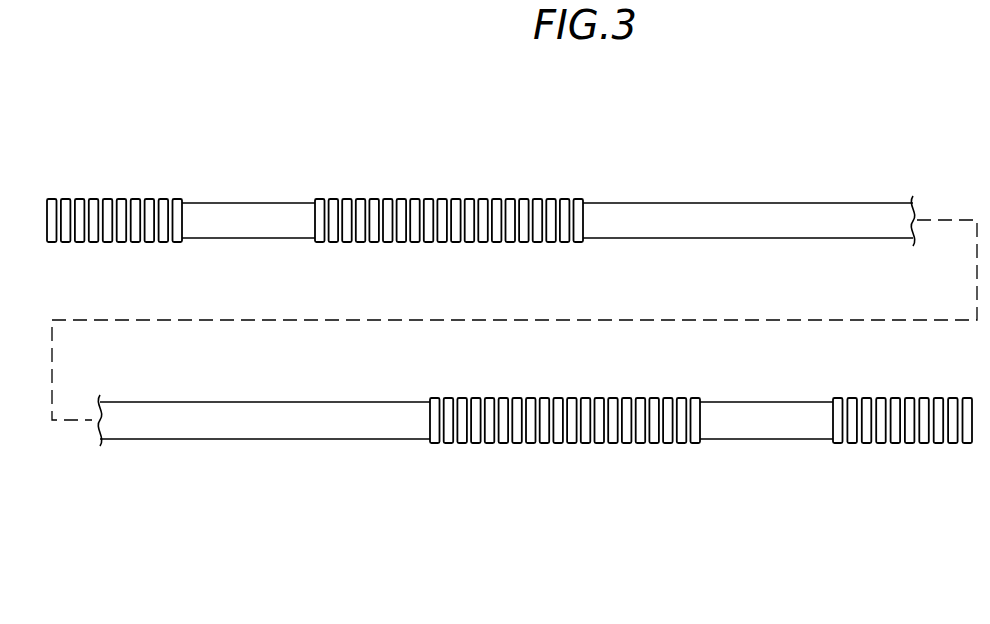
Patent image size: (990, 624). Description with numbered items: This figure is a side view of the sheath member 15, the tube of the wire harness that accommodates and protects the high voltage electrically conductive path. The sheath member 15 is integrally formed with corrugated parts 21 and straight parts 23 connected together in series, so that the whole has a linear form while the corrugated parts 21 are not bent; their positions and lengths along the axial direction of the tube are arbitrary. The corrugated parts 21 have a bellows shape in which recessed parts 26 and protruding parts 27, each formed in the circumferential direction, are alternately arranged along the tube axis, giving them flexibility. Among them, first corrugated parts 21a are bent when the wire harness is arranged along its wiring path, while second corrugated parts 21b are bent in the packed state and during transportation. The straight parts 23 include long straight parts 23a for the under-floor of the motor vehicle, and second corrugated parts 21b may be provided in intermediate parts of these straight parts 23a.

The sheath member 15 is at (673, 194).
The corrugated part 21 is at (105, 198).
The first corrugated part 21a is at (509, 331).
The second corrugated part 21b is at (507, 331).
The straight part 23 is at (243, 201).
The straight part for under-floor 23a is at (212, 520).
The recessed part 26 is at (155, 243).
The protruding part 27 is at (163, 243).